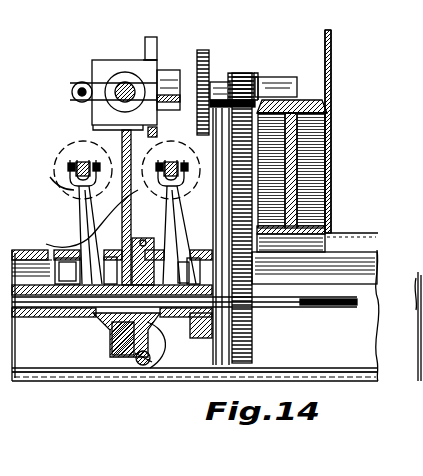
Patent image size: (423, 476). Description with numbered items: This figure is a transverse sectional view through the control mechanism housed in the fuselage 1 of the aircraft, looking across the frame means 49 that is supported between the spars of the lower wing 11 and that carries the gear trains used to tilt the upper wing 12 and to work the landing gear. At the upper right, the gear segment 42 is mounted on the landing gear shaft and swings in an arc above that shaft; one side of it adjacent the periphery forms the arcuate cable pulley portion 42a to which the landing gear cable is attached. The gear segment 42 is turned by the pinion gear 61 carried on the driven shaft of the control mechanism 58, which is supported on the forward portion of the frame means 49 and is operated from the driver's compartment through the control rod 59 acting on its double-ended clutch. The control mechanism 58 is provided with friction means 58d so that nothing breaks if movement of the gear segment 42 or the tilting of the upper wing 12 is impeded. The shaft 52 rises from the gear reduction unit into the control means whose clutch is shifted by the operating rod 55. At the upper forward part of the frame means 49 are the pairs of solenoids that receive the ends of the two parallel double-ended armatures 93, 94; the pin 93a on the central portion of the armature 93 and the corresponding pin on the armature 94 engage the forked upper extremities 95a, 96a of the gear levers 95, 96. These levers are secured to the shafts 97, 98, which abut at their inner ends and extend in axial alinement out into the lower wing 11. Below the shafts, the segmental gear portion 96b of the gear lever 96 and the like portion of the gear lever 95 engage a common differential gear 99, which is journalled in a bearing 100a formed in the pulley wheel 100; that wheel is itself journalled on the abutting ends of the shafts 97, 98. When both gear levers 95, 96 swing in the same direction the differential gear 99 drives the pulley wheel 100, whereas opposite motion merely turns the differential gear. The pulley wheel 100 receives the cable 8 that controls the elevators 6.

The fuselage 1 is at (333, 66).
The elevators 6 is at (158, 129).
The cable 8 is at (143, 370).
The lower wing 11 is at (366, 236).
The upper wing 12 is at (362, 286).
The gear segment 42 is at (251, 197).
The arcuate cable pulley portion 42a is at (250, 153).
The frame means 49 is at (77, 221).
The shaft 52 is at (170, 160).
The operating rod 55 is at (127, 48).
The control mechanism 58 is at (110, 72).
The friction means 58d is at (152, 73).
The control rod 59 is at (76, 82).
The pinion gear 61 is at (258, 78).
The double-ended armature 93 is at (80, 160).
The pin 93a is at (62, 170).
The double-ended armature 94 is at (211, 80).
The gear lever 95 is at (84, 232).
The forked upper extremity 95a is at (80, 212).
The gear lever 96 is at (182, 196).
The forked upper extremity 96a is at (220, 88).
The segmental gear portion 96b is at (157, 368).
The shaft 97 is at (38, 304).
The shaft 98 is at (296, 309).
The differential gear 99 is at (110, 333).
The pulley wheel 100 is at (148, 372).
The bearing 100a is at (118, 355).